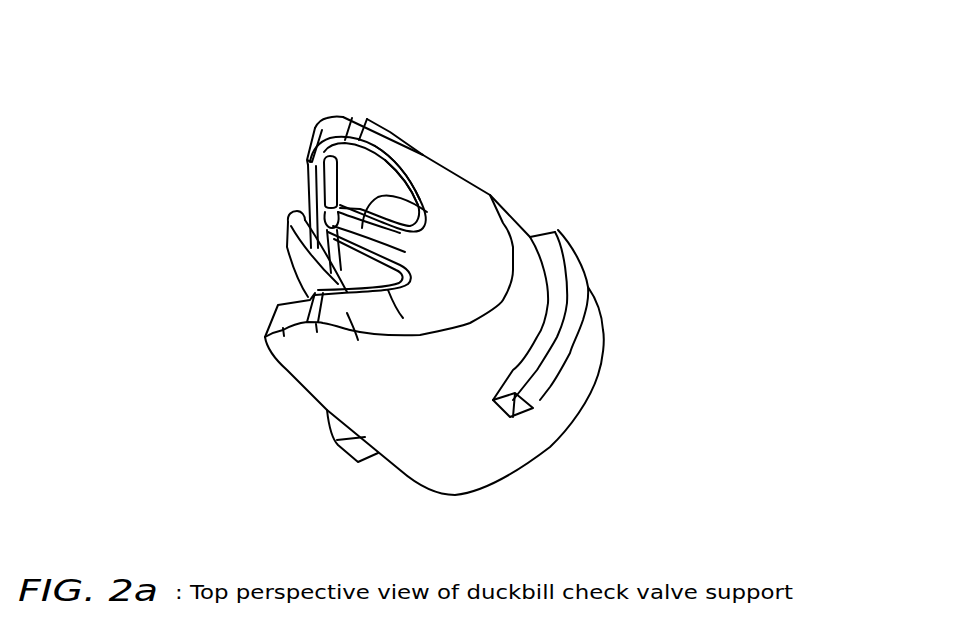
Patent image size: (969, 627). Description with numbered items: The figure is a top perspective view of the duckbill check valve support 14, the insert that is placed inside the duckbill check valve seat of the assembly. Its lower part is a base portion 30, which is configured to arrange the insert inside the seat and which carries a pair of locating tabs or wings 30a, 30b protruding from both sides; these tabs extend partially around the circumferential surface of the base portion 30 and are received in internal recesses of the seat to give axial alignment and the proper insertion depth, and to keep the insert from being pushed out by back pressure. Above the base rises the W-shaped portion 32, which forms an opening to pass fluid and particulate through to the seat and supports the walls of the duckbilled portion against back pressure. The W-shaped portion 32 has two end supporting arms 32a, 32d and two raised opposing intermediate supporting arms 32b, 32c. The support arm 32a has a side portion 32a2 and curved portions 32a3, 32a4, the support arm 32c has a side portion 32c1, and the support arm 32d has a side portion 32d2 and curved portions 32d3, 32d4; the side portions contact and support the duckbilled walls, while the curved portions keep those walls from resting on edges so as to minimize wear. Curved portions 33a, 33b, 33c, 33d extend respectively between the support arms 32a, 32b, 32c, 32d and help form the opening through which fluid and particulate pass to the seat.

The duckbill check valve support 14 is at (208, 82).
The base portion 30 is at (408, 458).
The locating tab or wing 30a is at (338, 432).
The locating tab or wing 30b is at (550, 370).
The W-shaped portion 32 is at (477, 267).
The end supporting arm 32a is at (328, 135).
The side portion 32a2 is at (385, 142).
The curved portion 32a3 is at (313, 133).
The curved portion 32a4 is at (360, 117).
The raised intermediate supporting arm 32b is at (288, 219).
The raised intermediate supporting arm 32c is at (393, 157).
The side portion 32c1 is at (340, 178).
The end supporting arm 32d is at (283, 328).
The side portion 32d2 is at (347, 313).
The curved portion 32d3 is at (265, 337).
The curved portion 32d4 is at (317, 327).
The curved portion 33a is at (307, 198).
The curved portion 33b is at (310, 292).
The curved portion 33c is at (427, 212).
The curved portion 33d is at (388, 290).